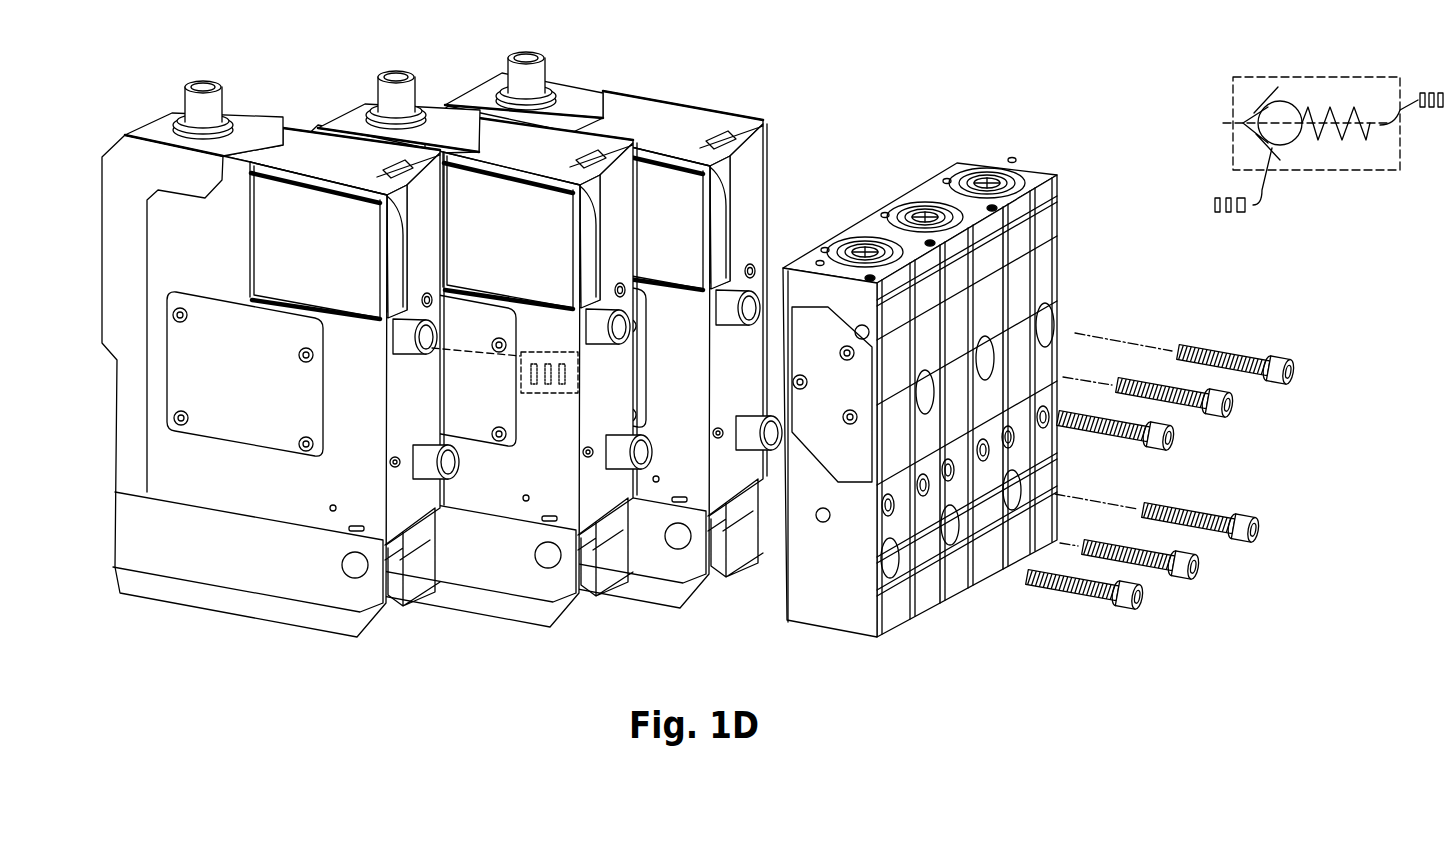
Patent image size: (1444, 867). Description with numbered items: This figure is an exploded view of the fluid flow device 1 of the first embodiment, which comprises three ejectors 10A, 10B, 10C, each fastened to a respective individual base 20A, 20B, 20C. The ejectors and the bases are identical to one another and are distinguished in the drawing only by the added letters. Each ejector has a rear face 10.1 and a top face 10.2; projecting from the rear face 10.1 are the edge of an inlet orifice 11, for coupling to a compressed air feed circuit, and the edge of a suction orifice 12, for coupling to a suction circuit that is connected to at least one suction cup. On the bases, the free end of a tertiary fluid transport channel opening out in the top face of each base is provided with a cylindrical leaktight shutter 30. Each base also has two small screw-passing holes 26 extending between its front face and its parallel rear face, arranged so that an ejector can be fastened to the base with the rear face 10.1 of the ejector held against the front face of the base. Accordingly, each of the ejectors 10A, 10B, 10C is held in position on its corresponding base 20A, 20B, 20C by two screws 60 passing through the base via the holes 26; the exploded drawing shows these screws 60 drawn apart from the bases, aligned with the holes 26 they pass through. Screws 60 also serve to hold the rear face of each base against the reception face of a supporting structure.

The fluid flow device 1 is at (1036, 324).
The ejector 10A is at (269, 364).
The ejector 10B is at (356, 104).
The ejector 10C is at (473, 85).
The rear face 10.1 is at (407, 606).
The top face 10.2 is at (306, 129).
The inlet orifice 11 is at (398, 348).
The suction orifice 12 is at (411, 447).
The base 20A is at (917, 398).
The base 20B is at (895, 200).
The base 20C is at (1037, 170).
The screw-passing holes 26 is at (880, 430).
The leaktight shutter 30 is at (852, 243).
The screws 60 is at (1253, 353).